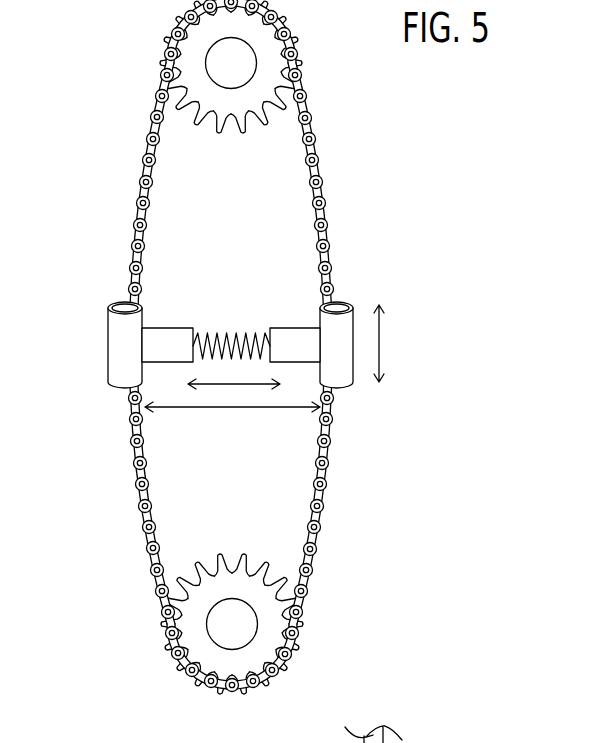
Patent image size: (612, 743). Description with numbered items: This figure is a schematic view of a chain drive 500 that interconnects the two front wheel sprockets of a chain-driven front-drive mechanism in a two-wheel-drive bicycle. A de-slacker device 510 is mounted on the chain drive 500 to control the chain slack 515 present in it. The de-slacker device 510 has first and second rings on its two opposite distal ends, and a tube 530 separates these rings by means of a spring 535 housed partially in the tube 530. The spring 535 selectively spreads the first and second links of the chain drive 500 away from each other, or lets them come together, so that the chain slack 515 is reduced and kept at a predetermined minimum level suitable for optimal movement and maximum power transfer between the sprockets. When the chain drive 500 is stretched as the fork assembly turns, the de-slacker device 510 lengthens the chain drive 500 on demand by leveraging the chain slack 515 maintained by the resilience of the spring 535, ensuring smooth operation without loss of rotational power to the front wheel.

The chain drive 500 is at (333, 125).
The de-slacker device 510 is at (330, 325).
The chain slack 515 is at (174, 501).
The tube 530 is at (168, 327).
The spring 535 is at (247, 330).